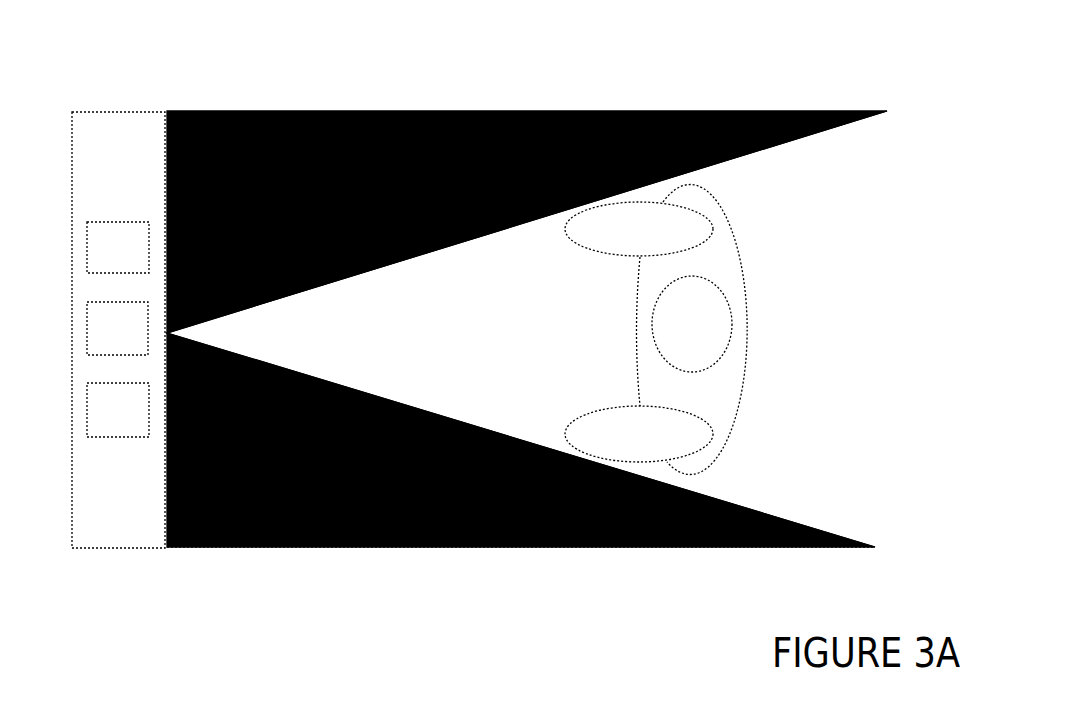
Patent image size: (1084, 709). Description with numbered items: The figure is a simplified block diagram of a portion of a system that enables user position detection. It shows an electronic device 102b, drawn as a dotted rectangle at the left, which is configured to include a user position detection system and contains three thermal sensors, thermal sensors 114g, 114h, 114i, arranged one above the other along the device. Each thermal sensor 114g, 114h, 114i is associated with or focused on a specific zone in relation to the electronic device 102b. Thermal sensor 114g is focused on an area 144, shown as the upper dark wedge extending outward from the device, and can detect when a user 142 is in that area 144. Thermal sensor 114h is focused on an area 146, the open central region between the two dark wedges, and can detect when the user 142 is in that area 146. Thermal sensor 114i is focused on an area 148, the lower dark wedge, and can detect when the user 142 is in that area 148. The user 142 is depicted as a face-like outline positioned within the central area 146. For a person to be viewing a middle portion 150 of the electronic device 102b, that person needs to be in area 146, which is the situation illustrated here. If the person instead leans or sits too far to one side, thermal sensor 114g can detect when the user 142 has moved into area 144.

The electronic device 102b is at (128, 112).
The thermal sensor 114g is at (118, 247).
The thermal sensor 114h is at (117, 328).
The thermal sensor 114i is at (118, 410).
The user 142 is at (753, 330).
The area 144 is at (696, 96).
The area 146 is at (846, 413).
The area 148 is at (508, 571).
The middle portion 150 is at (258, 548).